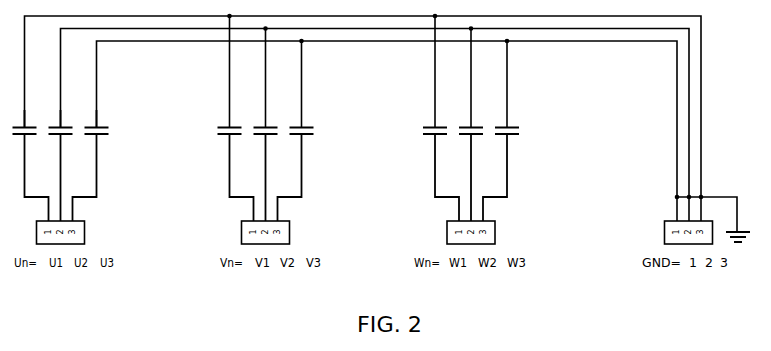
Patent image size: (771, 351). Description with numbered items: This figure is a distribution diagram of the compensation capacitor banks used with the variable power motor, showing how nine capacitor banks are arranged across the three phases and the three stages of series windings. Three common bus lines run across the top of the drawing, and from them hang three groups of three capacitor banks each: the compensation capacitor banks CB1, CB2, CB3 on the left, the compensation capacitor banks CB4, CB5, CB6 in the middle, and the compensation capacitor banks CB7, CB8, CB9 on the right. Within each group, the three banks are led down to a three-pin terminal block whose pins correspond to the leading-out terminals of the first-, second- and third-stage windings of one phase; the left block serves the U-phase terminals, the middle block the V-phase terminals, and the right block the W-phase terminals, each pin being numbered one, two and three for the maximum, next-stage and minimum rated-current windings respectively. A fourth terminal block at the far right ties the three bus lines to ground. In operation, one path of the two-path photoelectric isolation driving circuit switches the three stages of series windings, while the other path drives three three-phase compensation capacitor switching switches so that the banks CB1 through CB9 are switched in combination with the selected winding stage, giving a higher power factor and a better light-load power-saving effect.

The compensation capacitor bank CB1 is at (31, 165).
The compensation capacitor bank CB2 is at (65, 165).
The compensation capacitor bank CB3 is at (95, 165).
The compensation capacitor bank CB4 is at (236, 175).
The compensation capacitor bank CB5 is at (270, 175).
The compensation capacitor bank CB6 is at (300, 175).
The compensation capacitor bank CB7 is at (441, 175).
The compensation capacitor bank CB8 is at (475, 175).
The compensation capacitor bank CB9 is at (505, 175).